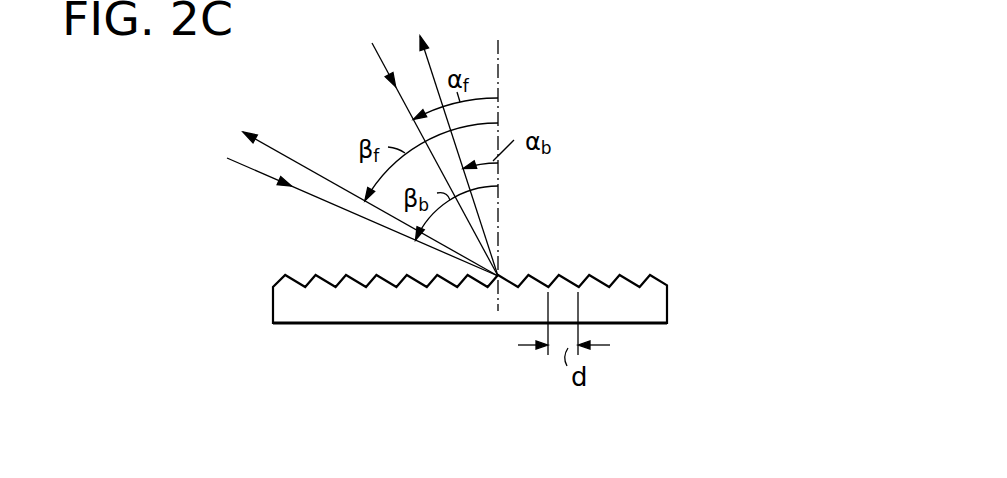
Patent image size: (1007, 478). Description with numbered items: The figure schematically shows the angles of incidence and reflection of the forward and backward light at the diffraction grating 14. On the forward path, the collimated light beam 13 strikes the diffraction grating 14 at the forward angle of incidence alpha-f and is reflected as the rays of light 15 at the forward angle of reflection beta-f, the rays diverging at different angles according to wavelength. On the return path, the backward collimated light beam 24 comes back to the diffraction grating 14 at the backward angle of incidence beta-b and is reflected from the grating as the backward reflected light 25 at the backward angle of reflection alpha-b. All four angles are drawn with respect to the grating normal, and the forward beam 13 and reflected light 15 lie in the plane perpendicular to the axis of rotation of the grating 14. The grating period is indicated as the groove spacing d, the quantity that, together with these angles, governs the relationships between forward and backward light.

The collimated light beam 13 is at (379, 56).
The diffraction grating 14 is at (657, 300).
The rays of light 15 is at (279, 152).
The collimated light beam 24 is at (248, 167).
The backward reflected light 25 is at (430, 66).